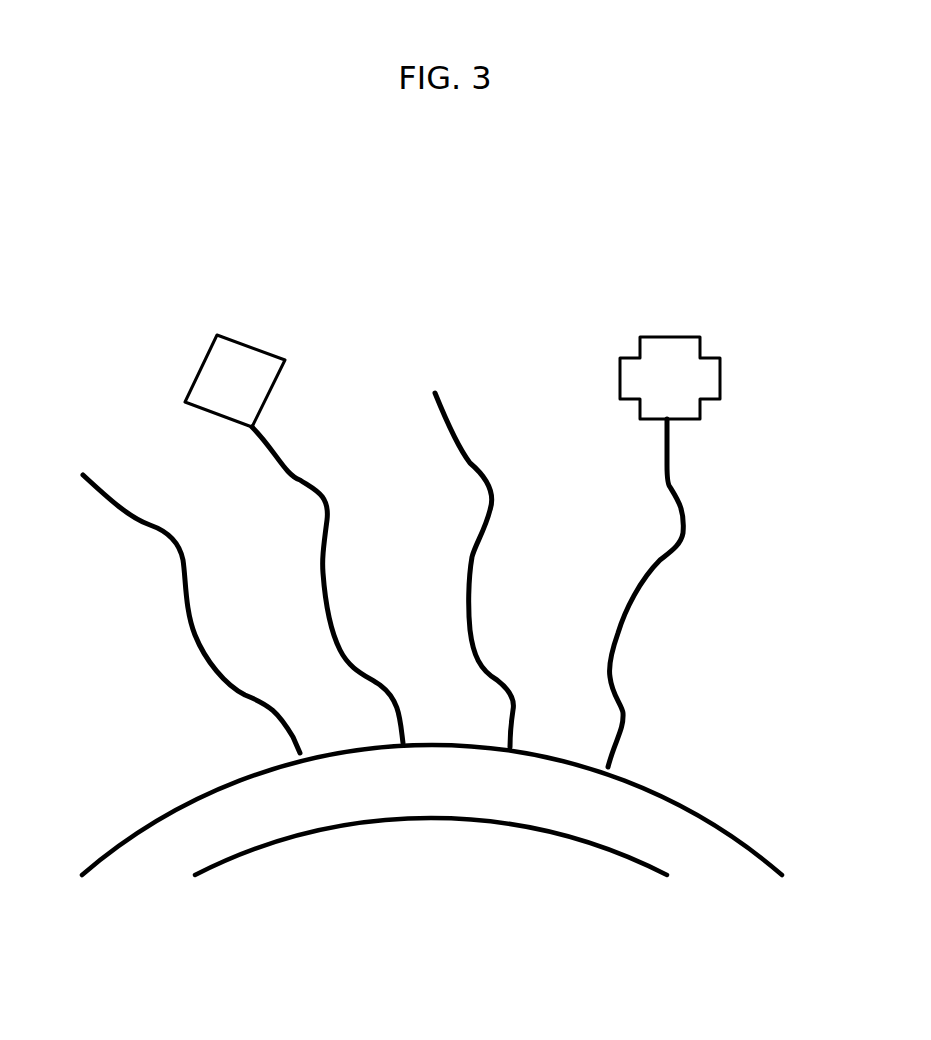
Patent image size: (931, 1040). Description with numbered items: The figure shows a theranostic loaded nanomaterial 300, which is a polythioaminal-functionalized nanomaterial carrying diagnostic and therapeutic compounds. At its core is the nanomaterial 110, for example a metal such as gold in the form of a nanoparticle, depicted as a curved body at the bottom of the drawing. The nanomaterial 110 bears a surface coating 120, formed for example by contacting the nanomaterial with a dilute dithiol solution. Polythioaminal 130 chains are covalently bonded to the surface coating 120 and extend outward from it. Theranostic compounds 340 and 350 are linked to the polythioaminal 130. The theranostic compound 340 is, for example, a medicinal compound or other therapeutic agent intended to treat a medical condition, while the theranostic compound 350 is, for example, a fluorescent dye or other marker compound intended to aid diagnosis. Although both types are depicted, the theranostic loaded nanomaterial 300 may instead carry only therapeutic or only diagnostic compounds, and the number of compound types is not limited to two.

The theranostic loaded nanomaterial 300 is at (110, 243).
The nanomaterial 110 is at (431, 846).
The surface coating 120 is at (432, 810).
The polythioaminal 130 is at (630, 627).
The theranostic compound 340 is at (670, 378).
The theranostic compound 350 is at (294, 539).